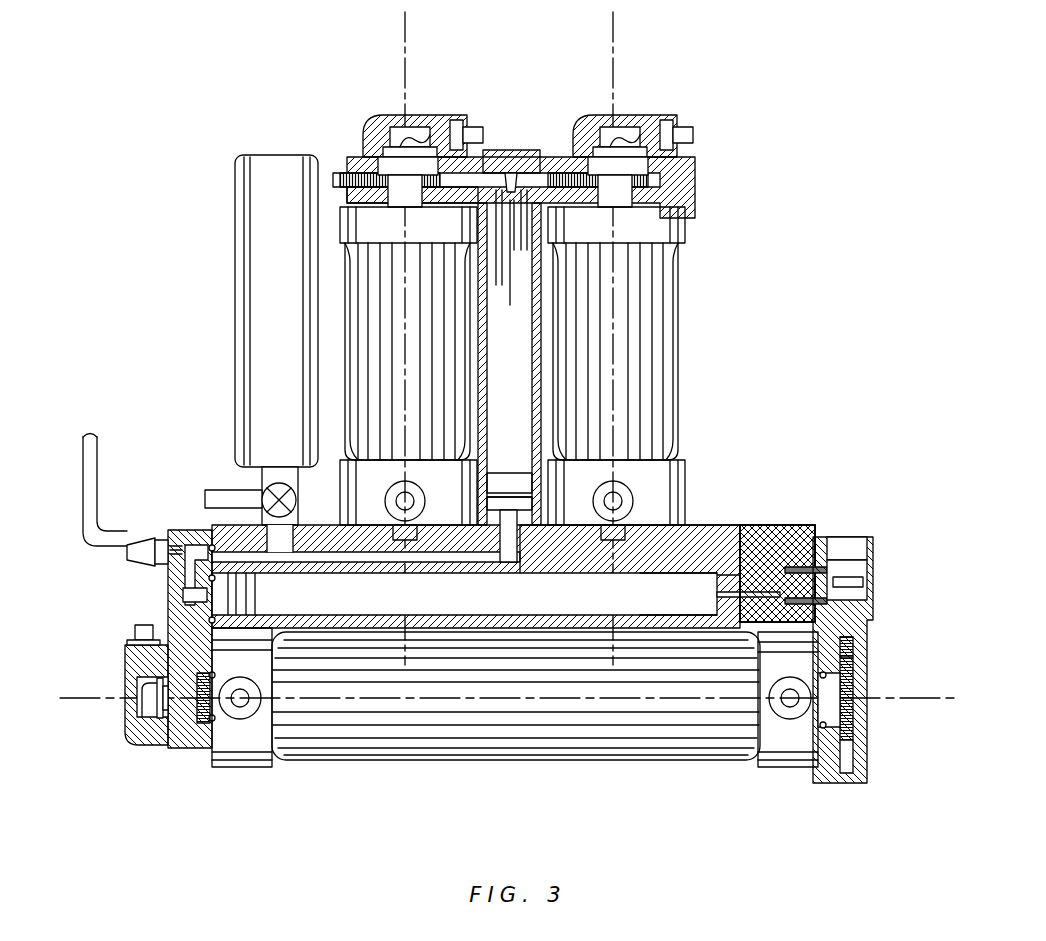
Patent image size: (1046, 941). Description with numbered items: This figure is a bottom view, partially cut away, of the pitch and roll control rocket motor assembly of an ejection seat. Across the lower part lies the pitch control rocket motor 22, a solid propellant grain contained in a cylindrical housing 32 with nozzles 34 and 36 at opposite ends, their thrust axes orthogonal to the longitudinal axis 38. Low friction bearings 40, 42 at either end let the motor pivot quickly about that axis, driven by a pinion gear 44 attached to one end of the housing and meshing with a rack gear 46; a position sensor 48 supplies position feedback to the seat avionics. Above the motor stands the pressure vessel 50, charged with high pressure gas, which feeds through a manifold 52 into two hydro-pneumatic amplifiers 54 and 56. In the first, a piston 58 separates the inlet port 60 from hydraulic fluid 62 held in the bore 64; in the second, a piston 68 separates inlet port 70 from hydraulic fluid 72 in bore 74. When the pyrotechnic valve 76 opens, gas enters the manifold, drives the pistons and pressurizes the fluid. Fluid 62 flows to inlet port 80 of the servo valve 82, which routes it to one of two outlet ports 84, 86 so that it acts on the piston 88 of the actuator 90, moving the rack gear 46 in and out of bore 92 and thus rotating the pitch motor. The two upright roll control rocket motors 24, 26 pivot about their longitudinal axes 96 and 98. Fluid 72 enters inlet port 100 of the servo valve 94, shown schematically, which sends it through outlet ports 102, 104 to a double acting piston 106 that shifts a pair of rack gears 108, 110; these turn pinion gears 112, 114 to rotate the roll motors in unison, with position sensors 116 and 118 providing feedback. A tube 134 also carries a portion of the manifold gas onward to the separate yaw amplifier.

The pitch control rocket motor 22 is at (550, 735).
The roll control rocket motor 24 is at (413, 290).
The roll control rocket motor 26 is at (619, 330).
The cylindrical housing 32 is at (692, 770).
The nozzle 34 is at (790, 705).
The nozzle 36 is at (243, 703).
The longitudinal axis 38 is at (912, 700).
The low friction bearing 40 is at (825, 740).
The low friction bearing 42 is at (195, 725).
The pinion gear 44 is at (855, 713).
The rack gear 46 is at (850, 668).
The position sensor 48 is at (140, 728).
The pressure vessel 50 is at (250, 200).
The manifold 52 is at (229, 558).
The hydro-pneumatic amplifier 54 is at (683, 567).
The hydro-pneumatic amplifier 56 is at (514, 377).
The piston 58 is at (255, 595).
The inlet port 60 is at (185, 598).
The hydraulic fluid 62 is at (483, 601).
The bore 64 is at (693, 590).
The piston 68 is at (508, 483).
The inlet port 70 is at (511, 530).
The hydraulic fluid 72 is at (496, 415).
The bore 74 is at (510, 330).
The pyrotechnic valve 76 is at (262, 495).
The inlet port 80 is at (750, 592).
The servo valve 82 is at (788, 540).
The outlet port 84 is at (838, 568).
The outlet port 86 is at (828, 613).
The piston 88 is at (856, 585).
The actuator 90 is at (870, 633).
The bore 92 is at (852, 770).
The servo valve 94 is at (499, 195).
The longitudinal axis 96 is at (404, 52).
The longitudinal axis 98 is at (614, 52).
The inlet port 100 is at (508, 258).
The outlet port 102 is at (496, 150).
The outlet port 104 is at (528, 195).
The double acting piston 106 is at (512, 175).
The rack gear 108 is at (665, 185).
The rack gear 110 is at (370, 192).
The pinion gear 112 is at (645, 145).
The pinion gear 114 is at (392, 165).
The position sensor 116 is at (452, 128).
The position sensor 118 is at (694, 137).
The tube 134 is at (100, 470).